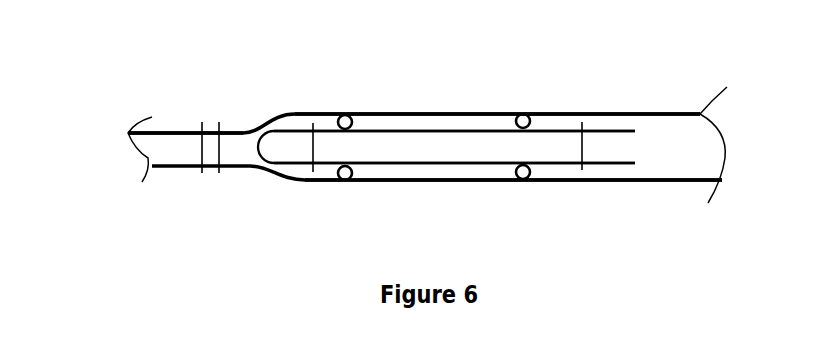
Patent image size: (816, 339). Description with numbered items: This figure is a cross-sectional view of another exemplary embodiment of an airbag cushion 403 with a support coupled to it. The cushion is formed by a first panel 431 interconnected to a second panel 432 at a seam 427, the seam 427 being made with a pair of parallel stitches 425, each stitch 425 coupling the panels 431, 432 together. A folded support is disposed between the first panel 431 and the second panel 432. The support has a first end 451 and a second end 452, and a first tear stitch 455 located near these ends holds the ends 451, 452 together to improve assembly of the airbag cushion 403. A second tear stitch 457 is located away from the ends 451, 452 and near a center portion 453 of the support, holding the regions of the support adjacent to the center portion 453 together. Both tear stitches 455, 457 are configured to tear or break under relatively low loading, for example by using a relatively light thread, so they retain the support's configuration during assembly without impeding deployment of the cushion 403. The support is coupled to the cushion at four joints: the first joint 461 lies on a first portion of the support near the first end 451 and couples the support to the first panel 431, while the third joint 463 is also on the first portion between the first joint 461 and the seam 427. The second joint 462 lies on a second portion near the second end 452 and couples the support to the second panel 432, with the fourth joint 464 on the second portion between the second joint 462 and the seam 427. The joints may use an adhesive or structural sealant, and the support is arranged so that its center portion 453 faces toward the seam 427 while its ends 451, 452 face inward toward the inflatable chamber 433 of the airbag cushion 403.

The airbag cushion 403 is at (173, 83).
The stitch 425 is at (218, 143).
The seam 427 is at (197, 147).
The center portion 453 is at (257, 158).
The second tear stitch 457 is at (312, 150).
The third joint 463 is at (345, 114).
The fourth joint 464 is at (345, 181).
The first panel 431 is at (370, 113).
The second panel 432 is at (382, 181).
The first joint 461 is at (522, 113).
The second joint 462 is at (522, 182).
The first end 451 is at (562, 129).
The second end 452 is at (552, 181).
The first tear stitch 455 is at (583, 147).
The inflatable chamber 433 is at (688, 157).